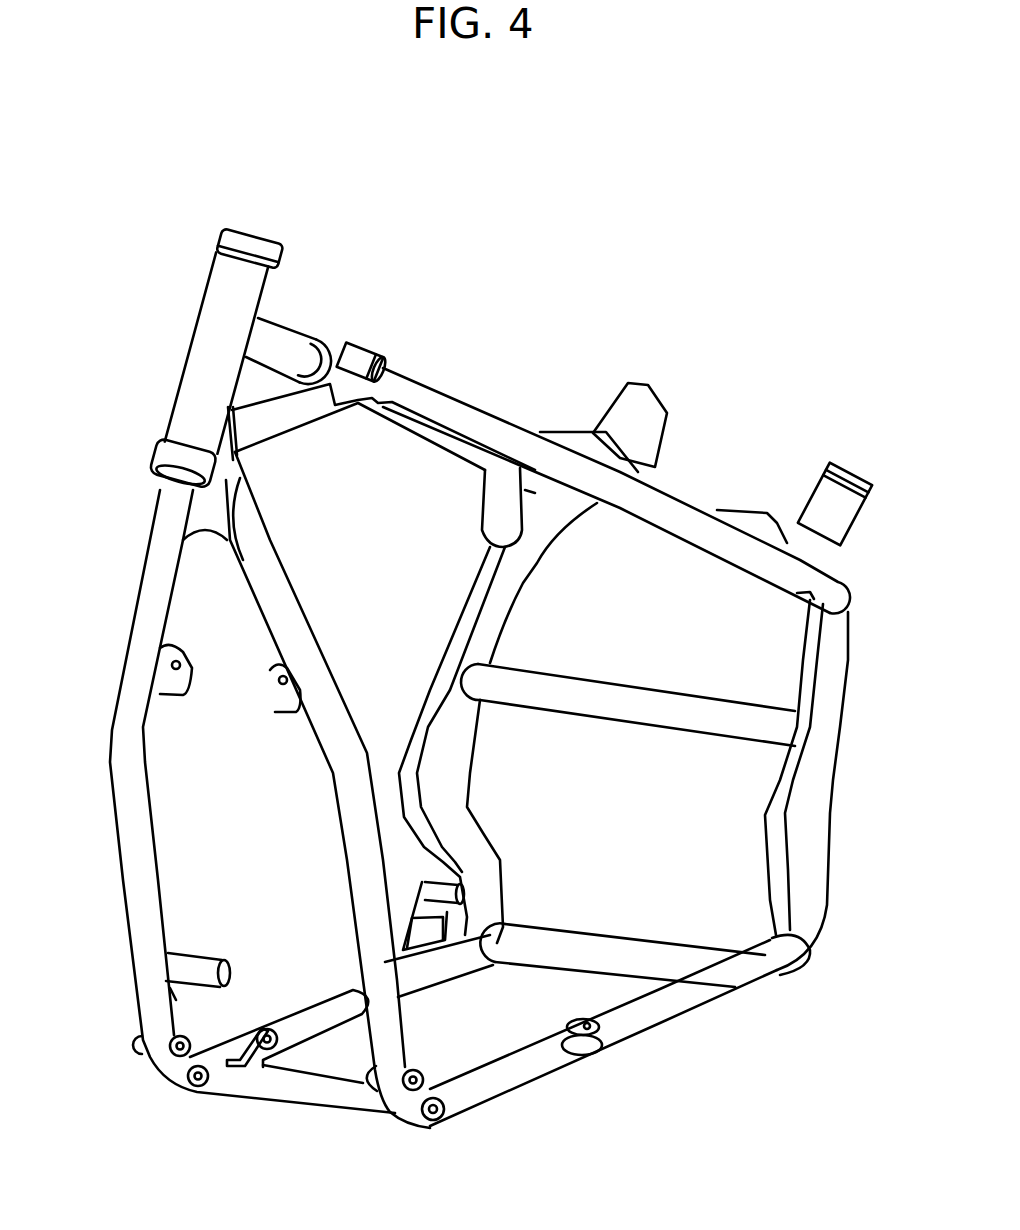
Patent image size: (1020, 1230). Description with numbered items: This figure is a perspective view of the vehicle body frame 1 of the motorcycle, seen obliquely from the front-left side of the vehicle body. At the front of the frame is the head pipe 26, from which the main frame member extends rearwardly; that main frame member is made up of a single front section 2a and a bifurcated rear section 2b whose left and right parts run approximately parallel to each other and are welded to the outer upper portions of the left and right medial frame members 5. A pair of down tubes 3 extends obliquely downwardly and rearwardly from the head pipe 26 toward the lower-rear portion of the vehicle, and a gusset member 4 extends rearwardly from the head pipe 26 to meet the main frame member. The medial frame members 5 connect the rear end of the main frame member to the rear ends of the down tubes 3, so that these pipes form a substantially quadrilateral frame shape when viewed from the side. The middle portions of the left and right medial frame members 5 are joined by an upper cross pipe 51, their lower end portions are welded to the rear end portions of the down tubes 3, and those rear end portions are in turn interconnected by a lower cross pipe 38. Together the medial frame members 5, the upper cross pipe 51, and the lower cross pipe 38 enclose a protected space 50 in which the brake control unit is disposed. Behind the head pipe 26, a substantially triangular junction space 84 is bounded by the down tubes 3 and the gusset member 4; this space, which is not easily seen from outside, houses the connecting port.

The vehicle body frame 1 is at (598, 328).
The front section 2a is at (298, 343).
The rear section 2b is at (483, 417).
The down tubes 3 is at (133, 812).
The gusset member 4 is at (353, 365).
The medial frame members 5 is at (453, 785).
The head pipe 26 is at (212, 342).
The lower cross pipe 38 is at (602, 963).
The protected space 50 is at (680, 920).
The upper cross pipe 51 is at (652, 710).
The junction space 84 is at (262, 460).